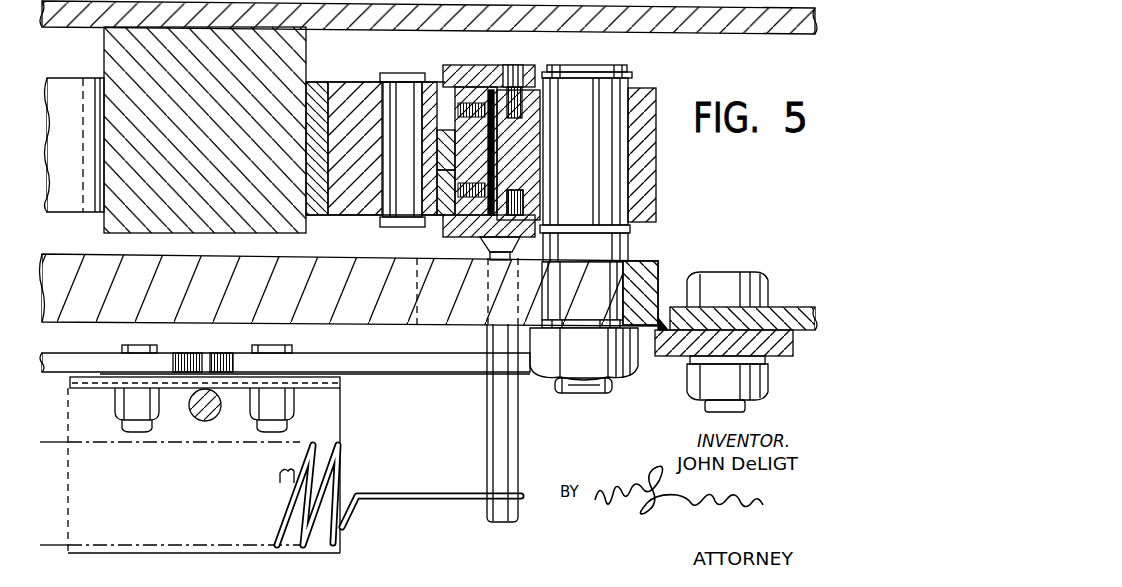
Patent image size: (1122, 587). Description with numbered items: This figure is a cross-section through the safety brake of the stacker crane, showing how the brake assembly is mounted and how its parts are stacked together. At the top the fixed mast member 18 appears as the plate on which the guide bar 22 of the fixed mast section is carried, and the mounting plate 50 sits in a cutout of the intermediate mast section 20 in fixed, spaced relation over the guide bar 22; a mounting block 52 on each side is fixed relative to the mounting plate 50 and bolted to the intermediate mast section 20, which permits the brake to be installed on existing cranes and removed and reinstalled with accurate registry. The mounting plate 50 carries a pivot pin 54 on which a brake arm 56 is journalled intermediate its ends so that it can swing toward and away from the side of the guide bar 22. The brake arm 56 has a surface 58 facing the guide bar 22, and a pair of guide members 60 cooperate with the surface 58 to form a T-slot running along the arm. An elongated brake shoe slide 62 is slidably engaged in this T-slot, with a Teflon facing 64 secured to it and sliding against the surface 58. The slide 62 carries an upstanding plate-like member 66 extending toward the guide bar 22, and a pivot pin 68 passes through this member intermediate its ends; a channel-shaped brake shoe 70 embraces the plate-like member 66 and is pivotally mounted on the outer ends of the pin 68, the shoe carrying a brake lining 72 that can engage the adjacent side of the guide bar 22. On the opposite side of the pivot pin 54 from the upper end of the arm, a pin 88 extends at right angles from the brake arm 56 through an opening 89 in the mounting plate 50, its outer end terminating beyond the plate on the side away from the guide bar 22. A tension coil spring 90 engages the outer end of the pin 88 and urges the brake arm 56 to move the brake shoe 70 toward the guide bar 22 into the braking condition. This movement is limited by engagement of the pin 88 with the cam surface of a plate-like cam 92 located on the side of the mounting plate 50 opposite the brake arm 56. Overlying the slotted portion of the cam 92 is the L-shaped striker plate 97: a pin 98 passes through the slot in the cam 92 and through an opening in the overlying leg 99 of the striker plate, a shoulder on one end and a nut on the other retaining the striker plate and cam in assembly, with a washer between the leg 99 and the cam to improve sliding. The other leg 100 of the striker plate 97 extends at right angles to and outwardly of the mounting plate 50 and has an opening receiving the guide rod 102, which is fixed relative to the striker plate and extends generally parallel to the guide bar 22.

The upper plate 18 is at (703, 30).
The intermediate mast section 20 is at (785, 311).
The guide bar 22 is at (298, 60).
The mounting plate 50 is at (165, 326).
The mounting blocks 52 is at (678, 356).
The pivot pins 54 is at (585, 175).
The brake arms 56 is at (646, 198).
The surface 58 is at (520, 125).
The guide members 60 is at (481, 66).
The brake shoe slide 62 is at (442, 222).
The Teflon facing 64 is at (496, 150).
The plate-like member 66 is at (457, 130).
The pivot pin 68 is at (405, 92).
The brake shoe 70 is at (72, 90).
The brake lining 72 is at (314, 216).
The pin 88 is at (505, 437).
The opening 89 is at (423, 322).
The tension coil spring 90 is at (332, 465).
The cam 92 is at (90, 362).
The striker plate 97 is at (213, 465).
The pin 98 is at (262, 353).
The leg 99 is at (330, 381).
The leg 100 is at (82, 416).
The guide rod 102 is at (204, 420).